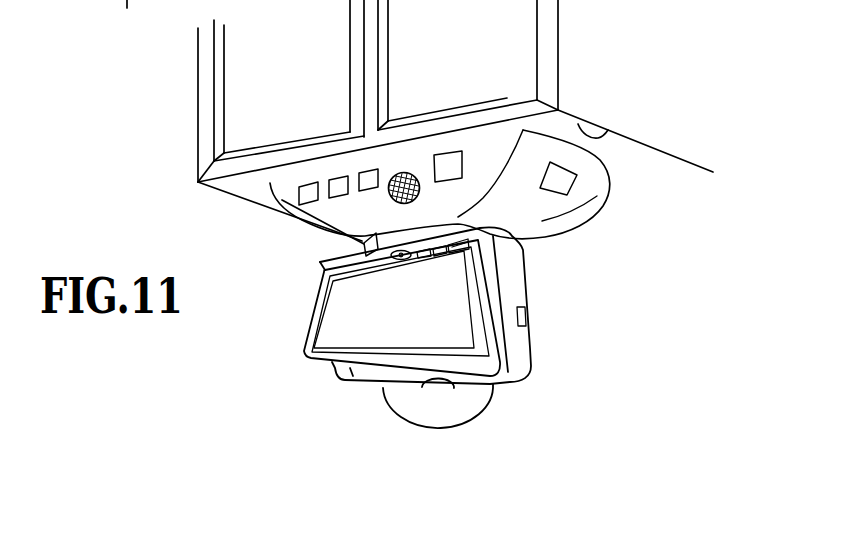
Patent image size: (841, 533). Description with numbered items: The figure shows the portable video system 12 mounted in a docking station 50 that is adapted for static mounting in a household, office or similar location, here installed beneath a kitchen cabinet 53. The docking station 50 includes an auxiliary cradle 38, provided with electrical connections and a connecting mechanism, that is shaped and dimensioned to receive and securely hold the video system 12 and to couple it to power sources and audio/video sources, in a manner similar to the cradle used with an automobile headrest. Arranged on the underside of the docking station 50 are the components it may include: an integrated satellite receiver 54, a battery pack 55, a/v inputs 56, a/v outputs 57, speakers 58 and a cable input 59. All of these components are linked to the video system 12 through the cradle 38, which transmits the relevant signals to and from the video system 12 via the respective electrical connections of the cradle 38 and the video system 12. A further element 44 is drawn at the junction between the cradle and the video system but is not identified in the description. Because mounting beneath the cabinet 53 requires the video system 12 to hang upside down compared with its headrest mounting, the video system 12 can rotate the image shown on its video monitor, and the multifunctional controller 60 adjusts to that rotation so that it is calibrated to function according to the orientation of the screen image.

The video system 12 is at (527, 348).
The auxiliary cradle 38 is at (333, 240).
The mounting bracket 44 is at (362, 243).
The docking station 50 is at (541, 218).
The kitchen cabinet 53 is at (608, 130).
The integrated satellite receiver 54 is at (299, 196).
The battery pack 55 is at (329, 189).
The a/v inputs 56 is at (360, 182).
The a/v outputs 57 is at (445, 161).
The speakers 58 is at (401, 174).
The cable input 59 is at (565, 176).
The multifunctional controller 60 is at (402, 259).